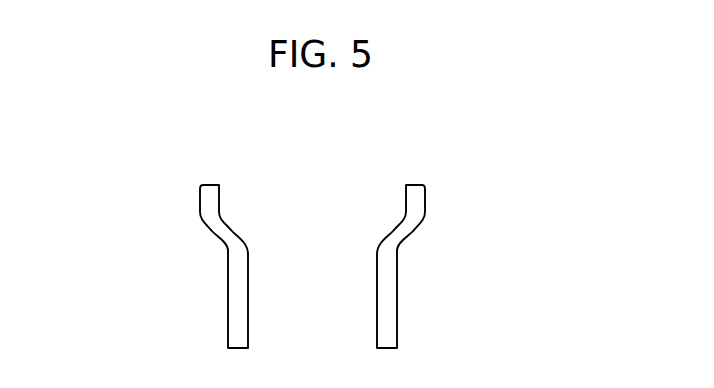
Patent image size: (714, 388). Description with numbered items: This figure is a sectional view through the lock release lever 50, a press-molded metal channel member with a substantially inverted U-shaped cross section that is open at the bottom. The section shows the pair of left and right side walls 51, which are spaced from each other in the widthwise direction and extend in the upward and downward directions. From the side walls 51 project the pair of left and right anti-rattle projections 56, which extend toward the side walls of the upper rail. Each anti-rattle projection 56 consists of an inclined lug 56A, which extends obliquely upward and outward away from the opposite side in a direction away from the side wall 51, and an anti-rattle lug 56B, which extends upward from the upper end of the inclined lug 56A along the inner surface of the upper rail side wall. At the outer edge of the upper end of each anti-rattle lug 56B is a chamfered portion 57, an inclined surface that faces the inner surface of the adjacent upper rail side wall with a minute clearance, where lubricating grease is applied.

The lock release lever 50 is at (158, 188).
The side wall 51 is at (232, 312).
The anti-rattle projection 56 is at (309, 236).
The inclined lug 56A is at (213, 228).
The anti-rattle lug 56B is at (208, 203).
The chamfered portion 57 is at (204, 188).